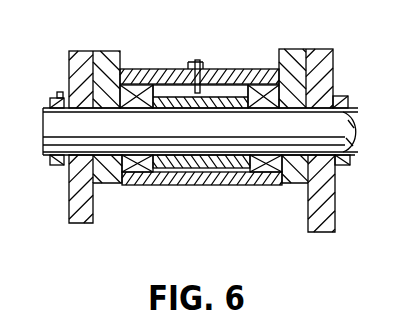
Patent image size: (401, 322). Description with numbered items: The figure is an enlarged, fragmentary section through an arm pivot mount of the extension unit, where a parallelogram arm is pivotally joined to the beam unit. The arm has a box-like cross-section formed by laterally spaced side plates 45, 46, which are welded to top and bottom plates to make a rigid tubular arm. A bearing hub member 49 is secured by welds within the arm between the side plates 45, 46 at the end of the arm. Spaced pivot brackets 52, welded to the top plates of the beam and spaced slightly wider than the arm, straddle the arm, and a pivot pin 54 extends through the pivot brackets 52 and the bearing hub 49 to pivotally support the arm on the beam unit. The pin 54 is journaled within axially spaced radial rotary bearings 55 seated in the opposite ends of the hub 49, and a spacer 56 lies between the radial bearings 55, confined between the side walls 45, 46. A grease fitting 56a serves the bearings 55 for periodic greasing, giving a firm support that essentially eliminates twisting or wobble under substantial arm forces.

The side plate 45 is at (108, 183).
The side plate 46 is at (295, 181).
The bearing hub member 49 is at (234, 62).
The pivot bracket 52 is at (334, 57).
The pivot pin 54 is at (200, 131).
The radial rotary bearing 55 is at (150, 154).
The spacer 56 is at (189, 185).
The grease fitting 56a is at (186, 60).